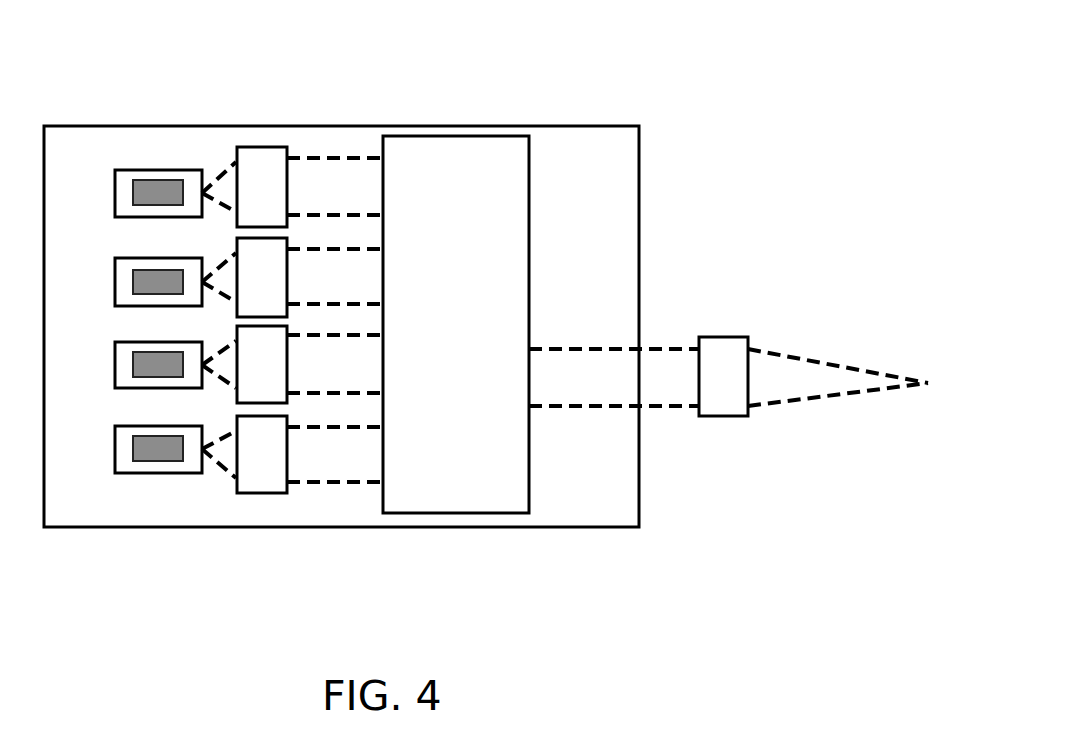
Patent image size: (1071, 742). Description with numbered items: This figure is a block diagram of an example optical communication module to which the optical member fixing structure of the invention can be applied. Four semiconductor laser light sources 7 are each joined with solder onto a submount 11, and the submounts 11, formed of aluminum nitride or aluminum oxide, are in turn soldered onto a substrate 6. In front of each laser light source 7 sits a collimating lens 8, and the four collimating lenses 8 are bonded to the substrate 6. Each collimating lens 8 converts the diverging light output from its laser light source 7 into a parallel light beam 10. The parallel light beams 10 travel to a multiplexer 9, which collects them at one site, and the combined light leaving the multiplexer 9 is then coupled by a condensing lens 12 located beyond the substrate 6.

The substrate 6 is at (105, 126).
The semiconductor laser light source 7 is at (147, 450).
The collimating lens 8 is at (262, 493).
The multiplexer 9 is at (470, 516).
The parallel light beam 10 is at (348, 157).
The submount 11 is at (153, 170).
The condensing lens 12 is at (723, 337).